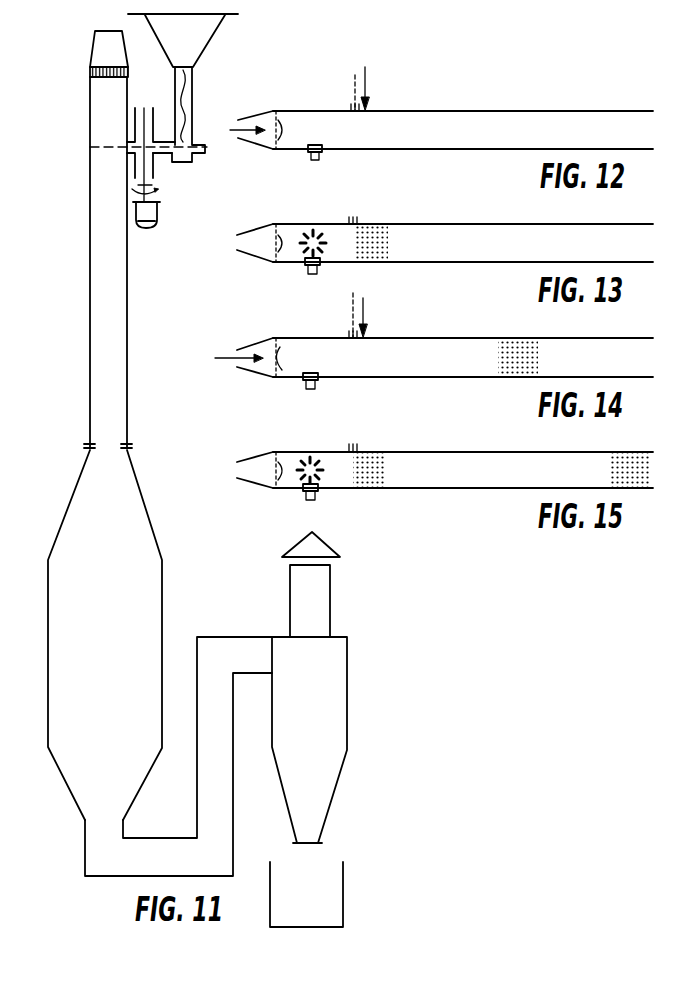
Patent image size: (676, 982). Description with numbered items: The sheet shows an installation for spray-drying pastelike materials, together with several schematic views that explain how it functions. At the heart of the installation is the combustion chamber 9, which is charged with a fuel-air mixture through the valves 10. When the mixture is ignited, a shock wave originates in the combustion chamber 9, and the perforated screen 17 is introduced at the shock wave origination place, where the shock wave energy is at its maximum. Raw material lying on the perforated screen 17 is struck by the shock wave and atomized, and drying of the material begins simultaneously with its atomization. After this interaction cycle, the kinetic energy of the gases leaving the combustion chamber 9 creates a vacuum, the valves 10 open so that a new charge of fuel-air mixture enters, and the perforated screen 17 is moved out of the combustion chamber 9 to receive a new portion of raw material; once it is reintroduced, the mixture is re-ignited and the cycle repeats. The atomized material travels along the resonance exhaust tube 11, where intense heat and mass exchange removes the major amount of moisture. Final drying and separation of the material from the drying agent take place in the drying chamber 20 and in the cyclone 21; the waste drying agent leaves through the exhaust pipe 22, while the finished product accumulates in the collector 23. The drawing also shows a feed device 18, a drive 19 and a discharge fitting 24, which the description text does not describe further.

In FIG. 11, the combustion chamber 9 is at (97, 85).
In FIG. 12, the combustion chamber 9 is at (337, 142).
In FIG. 13, the combustion chamber 9 is at (322, 235).
In FIG. 14, the combustion chamber 9 is at (298, 345).
In FIG. 15, the combustion chamber 9 is at (311, 455).
In FIG. 11, the valves 10 is at (95, 53).
In FIG. 12, the valves 10 is at (276, 111).
In FIG. 13, the valves 10 is at (281, 233).
In FIG. 14, the valves 10 is at (267, 375).
In FIG. 15, the valves 10 is at (272, 485).
In FIG. 11, the resonance exhaust tube 11 is at (90, 197).
In FIG. 12, the resonance exhaust tube 11 is at (493, 110).
In FIG. 13, the resonance exhaust tube 11 is at (473, 223).
In FIG. 14, the resonance exhaust tube 11 is at (500, 337).
In FIG. 15, the resonance exhaust tube 11 is at (470, 450).
In FIG. 11, the perforated screen 17 is at (90, 144).
In FIG. 12, the perforated screen 17 is at (355, 77).
In FIG. 13, the perforated screen 17 is at (372, 227).
In FIG. 14, the perforated screen 17 is at (357, 298).
In FIG. 15, the perforated screen 17 is at (362, 452).
In FIG. 11, the feed screw conveyor with hopper 18 is at (185, 97).
In FIG. 11, the stirrer drive motor 19 is at (158, 220).
In FIG. 11, the drying chamber 20 is at (130, 517).
In FIG. 11, the cyclone 21 is at (285, 652).
In FIG. 11, the exhaust pipe 22 is at (300, 597).
In FIG. 11, the collector 23 is at (310, 915).
In FIG. 12, the bottom drain / discharge valve 24 is at (308, 157).
In FIG. 13, the bottom drain / discharge valve 24 is at (310, 271).
In FIG. 14, the bottom drain / discharge valve 24 is at (308, 389).
In FIG. 15, the bottom drain / discharge valve 24 is at (305, 495).